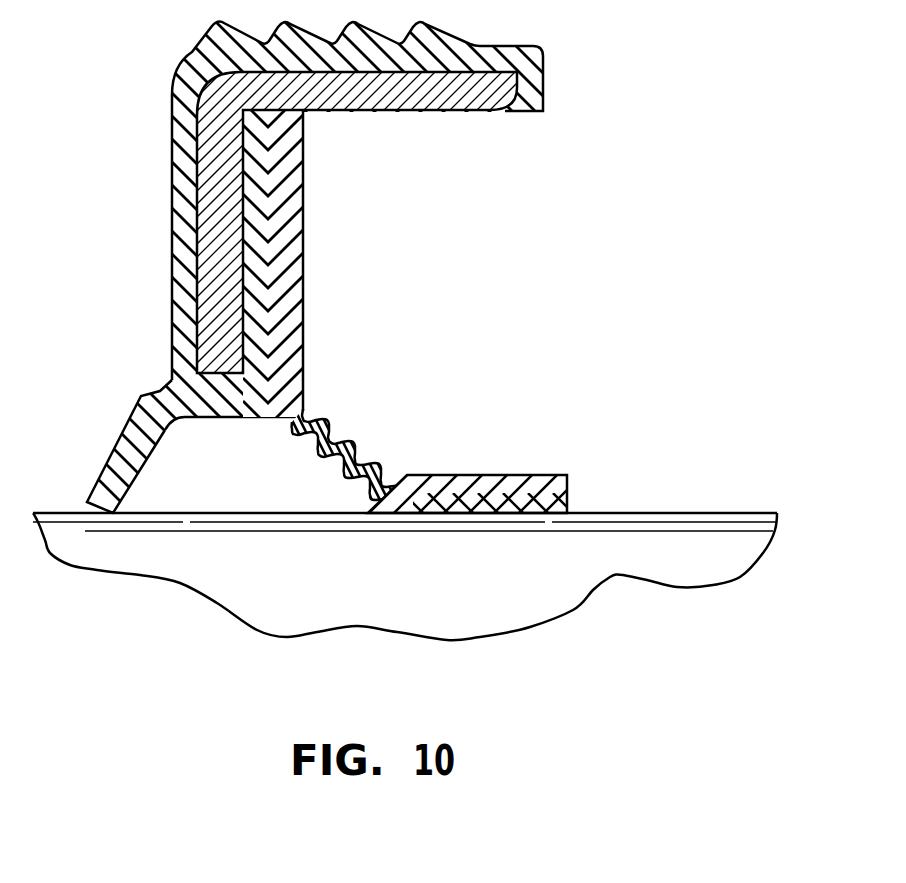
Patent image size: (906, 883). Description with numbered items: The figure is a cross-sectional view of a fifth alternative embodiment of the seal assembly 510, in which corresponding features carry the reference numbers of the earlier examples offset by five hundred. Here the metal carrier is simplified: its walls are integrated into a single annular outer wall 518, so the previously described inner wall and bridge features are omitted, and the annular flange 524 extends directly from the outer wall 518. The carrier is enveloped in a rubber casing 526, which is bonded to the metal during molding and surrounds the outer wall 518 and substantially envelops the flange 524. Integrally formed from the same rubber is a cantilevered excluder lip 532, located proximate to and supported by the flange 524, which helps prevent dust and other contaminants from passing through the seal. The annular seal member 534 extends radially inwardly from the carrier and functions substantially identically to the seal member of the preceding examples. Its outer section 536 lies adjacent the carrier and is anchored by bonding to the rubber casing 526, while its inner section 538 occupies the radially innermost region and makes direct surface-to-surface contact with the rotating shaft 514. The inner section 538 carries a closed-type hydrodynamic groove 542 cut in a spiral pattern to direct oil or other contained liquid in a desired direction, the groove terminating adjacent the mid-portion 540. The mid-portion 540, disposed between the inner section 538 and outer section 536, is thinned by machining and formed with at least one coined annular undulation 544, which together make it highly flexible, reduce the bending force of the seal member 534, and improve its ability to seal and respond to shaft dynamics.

The seal assembly 510 is at (555, 197).
The rotating shaft 514 is at (725, 512).
The annular outer wall 518 is at (415, 112).
The annular flange 524 is at (197, 212).
The rubber casing 526 is at (187, 67).
The excluder lip 532 is at (110, 457).
The seal member 534 is at (571, 473).
The outer section 536 is at (325, 363).
The inner section 538 is at (570, 456).
The mid-portion 540 is at (340, 364).
The hydrodynamic groove 542 is at (480, 513).
The annular undulation 544 is at (365, 475).